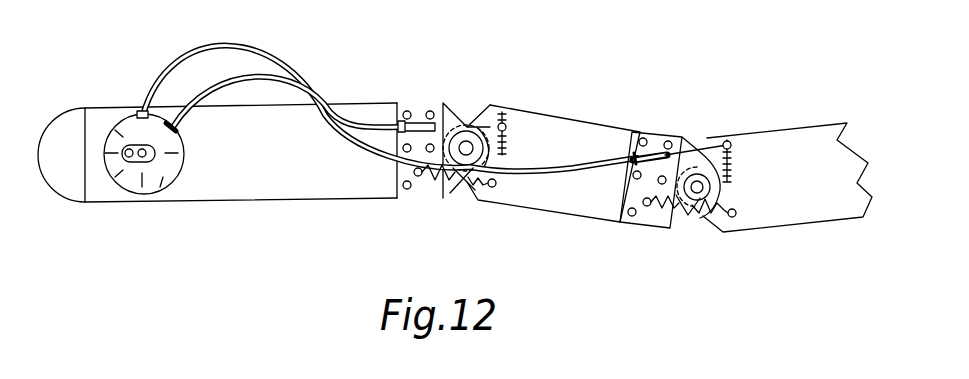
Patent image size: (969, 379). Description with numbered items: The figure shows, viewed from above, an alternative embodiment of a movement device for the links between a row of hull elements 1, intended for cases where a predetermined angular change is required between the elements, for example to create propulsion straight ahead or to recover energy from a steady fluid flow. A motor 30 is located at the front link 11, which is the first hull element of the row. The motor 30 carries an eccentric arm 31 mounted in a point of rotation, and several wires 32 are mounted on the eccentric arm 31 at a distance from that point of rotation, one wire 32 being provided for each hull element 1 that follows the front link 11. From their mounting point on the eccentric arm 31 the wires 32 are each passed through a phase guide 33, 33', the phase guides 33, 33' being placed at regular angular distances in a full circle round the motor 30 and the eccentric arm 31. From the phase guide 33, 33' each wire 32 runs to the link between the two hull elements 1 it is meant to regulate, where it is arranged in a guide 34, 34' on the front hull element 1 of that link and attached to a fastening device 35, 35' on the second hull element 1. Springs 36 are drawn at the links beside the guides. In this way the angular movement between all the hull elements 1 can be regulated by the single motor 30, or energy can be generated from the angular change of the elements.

The hull element 1 is at (813, 205).
The front link 11 is at (313, 183).
The motor 30 is at (163, 190).
The eccentric arm 31 is at (130, 175).
The wire 32 is at (368, 109).
The phase guide 33 is at (368, 109).
The phase guide 33' is at (283, 117).
The guide 34 is at (423, 89).
The guide 34' is at (678, 116).
The fastening device 35 is at (528, 105).
The fastening device 35' is at (749, 131).
The spring 36 is at (678, 205).